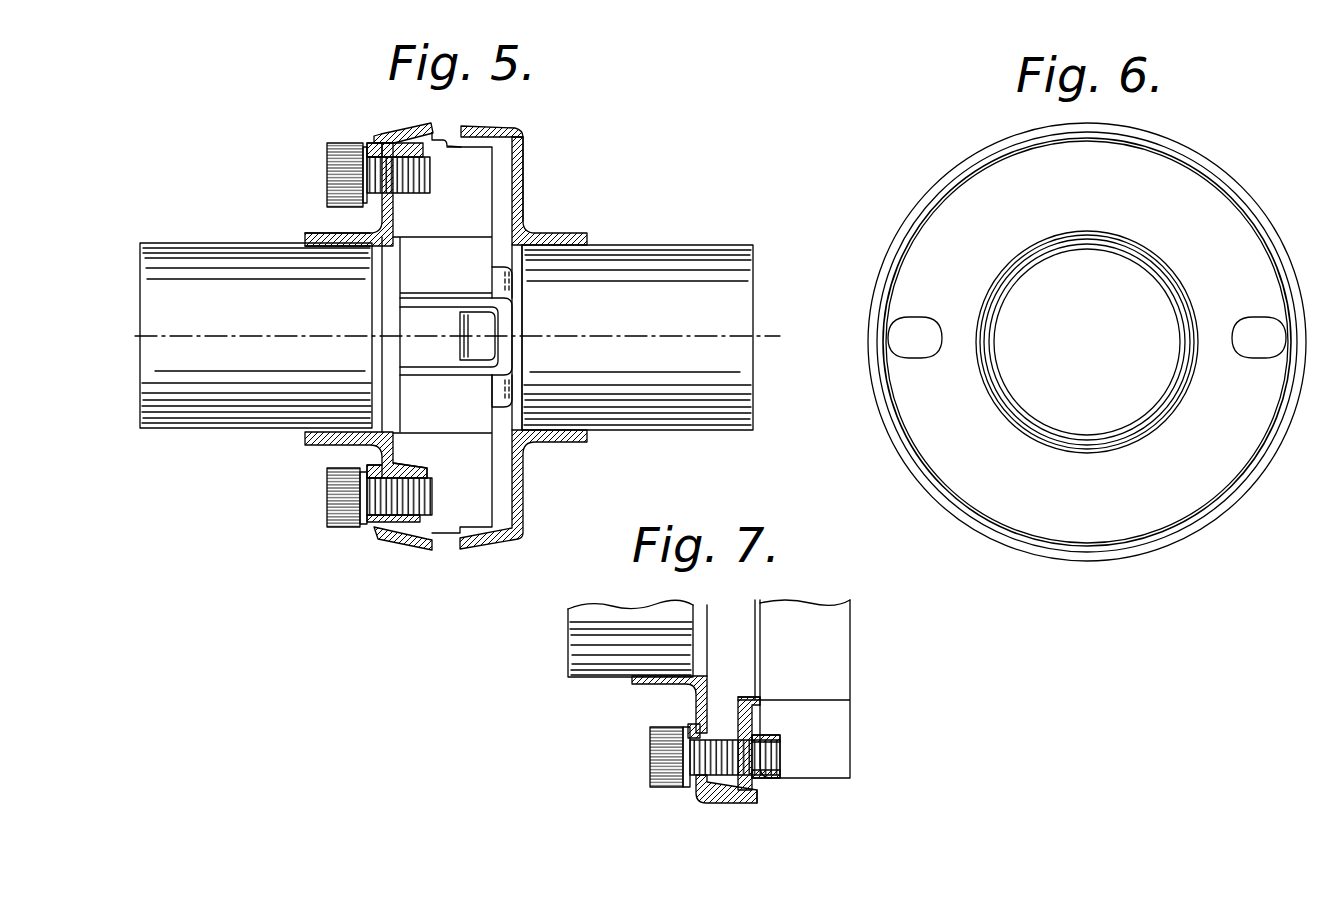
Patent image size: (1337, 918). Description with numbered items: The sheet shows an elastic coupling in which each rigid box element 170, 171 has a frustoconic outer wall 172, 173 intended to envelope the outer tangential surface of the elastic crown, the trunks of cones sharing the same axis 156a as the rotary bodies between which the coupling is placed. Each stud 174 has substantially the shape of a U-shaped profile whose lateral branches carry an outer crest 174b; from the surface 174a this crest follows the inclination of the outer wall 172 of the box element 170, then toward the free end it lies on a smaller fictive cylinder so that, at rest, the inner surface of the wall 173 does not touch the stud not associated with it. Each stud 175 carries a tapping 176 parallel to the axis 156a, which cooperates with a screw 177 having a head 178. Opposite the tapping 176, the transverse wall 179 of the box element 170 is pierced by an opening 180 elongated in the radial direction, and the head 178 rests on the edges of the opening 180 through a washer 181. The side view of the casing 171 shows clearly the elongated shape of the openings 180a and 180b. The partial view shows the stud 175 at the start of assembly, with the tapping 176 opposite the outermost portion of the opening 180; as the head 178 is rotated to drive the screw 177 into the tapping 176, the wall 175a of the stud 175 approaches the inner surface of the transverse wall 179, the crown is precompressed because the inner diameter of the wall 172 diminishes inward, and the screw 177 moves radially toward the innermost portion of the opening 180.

In FIG. 5, the axis 156a is at (258, 337).
In FIG. 5, the box element 170 is at (392, 128).
In FIG. 7, the box element 170 is at (714, 800).
In FIG. 5, the box element 171 is at (515, 128).
In FIG. 6, the box element 171 is at (1212, 200).
In FIG. 5, the outer wall 172 is at (441, 140).
In FIG. 7, the outer wall 172 is at (759, 796).
In FIG. 5, the outer wall 173 is at (524, 136).
In FIG. 5, the stud 174 is at (400, 213).
In FIG. 5, the surface 174a is at (395, 220).
In FIG. 5, the outer crest 174b is at (470, 131).
In FIG. 5, the stud 175 is at (393, 453).
In FIG. 7, the stud 175 is at (753, 720).
In FIG. 7, the wall 175a is at (749, 703).
In FIG. 5, the tapping 176 is at (397, 477).
In FIG. 7, the tapping 176 is at (781, 748).
In FIG. 5, the screw 177 is at (388, 527).
In FIG. 7, the screw 177 is at (670, 745).
In FIG. 5, the head 178 is at (350, 507).
In FIG. 7, the head 178 is at (660, 764).
In FIG. 5, the transverse wall 179 is at (373, 452).
In FIG. 7, the transverse wall 179 is at (693, 703).
In FIG. 5, the opening 180 is at (373, 523).
In FIG. 7, the opening 180 is at (700, 730).
In FIG. 6, the opening 180a is at (928, 330).
In FIG. 6, the opening 180b is at (1237, 331).
In FIG. 7, the washer 181 is at (686, 782).